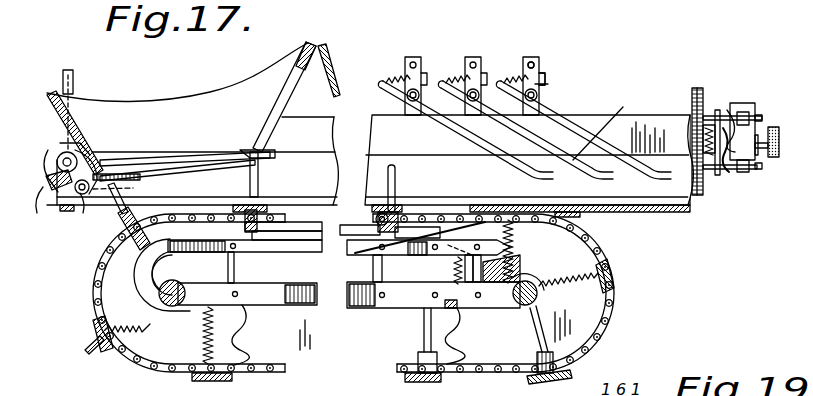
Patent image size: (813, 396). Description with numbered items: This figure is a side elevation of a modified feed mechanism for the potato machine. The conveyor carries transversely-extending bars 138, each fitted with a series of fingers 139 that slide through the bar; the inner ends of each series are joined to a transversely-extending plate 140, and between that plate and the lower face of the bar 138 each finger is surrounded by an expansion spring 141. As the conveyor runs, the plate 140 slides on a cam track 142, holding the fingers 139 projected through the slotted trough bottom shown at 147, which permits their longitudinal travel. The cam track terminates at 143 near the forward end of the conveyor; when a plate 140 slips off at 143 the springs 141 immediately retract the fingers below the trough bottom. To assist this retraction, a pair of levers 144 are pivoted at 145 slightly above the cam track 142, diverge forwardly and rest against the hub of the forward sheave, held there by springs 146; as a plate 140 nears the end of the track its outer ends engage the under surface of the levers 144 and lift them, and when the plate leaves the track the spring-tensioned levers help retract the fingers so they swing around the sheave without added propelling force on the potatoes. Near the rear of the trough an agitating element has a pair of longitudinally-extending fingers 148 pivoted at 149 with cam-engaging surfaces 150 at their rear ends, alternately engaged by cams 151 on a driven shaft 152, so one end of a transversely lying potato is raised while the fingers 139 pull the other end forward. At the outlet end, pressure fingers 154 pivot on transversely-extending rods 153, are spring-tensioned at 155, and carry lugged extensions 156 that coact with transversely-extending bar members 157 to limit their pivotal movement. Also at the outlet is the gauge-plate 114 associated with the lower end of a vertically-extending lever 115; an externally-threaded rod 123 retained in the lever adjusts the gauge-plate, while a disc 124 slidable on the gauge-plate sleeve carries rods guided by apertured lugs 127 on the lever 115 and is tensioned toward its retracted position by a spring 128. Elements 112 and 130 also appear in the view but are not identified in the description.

The frame 112 is at (690, 206).
The gauge-plate 114 is at (696, 88).
The vertically-extending lever 115 is at (755, 112).
The externally-threaded rod 123 is at (770, 156).
The disc 124 is at (726, 170).
The apertured lugs 127 is at (744, 112).
The spring 128 is at (717, 176).
The hook 130 is at (738, 140).
The transversely-extending bars 138 is at (96, 322).
The fingers 139 is at (88, 342).
The transversely-extending plate 140 is at (153, 265).
The expansion spring 141 is at (114, 238).
The cam track 142 is at (272, 247).
The forward end of cam track 143 is at (514, 262).
The levers 144 is at (487, 270).
The pivot 145 is at (372, 219).
The springs 146 is at (457, 268).
The slotted formation 147 is at (482, 205).
The longitudinally-extending fingers 148 is at (262, 192).
The pivot 149 is at (83, 210).
The cam-engaging surfaces 150 is at (40, 212).
The cams 151 is at (56, 160).
The driven shaft 152 is at (96, 158).
The transversely-extending rods 153 is at (541, 95).
The pressure fingers 154 is at (617, 131).
The spring 155 is at (513, 76).
The lugged extensions 156 is at (538, 80).
The transversely-extending bar members 157 is at (541, 80).